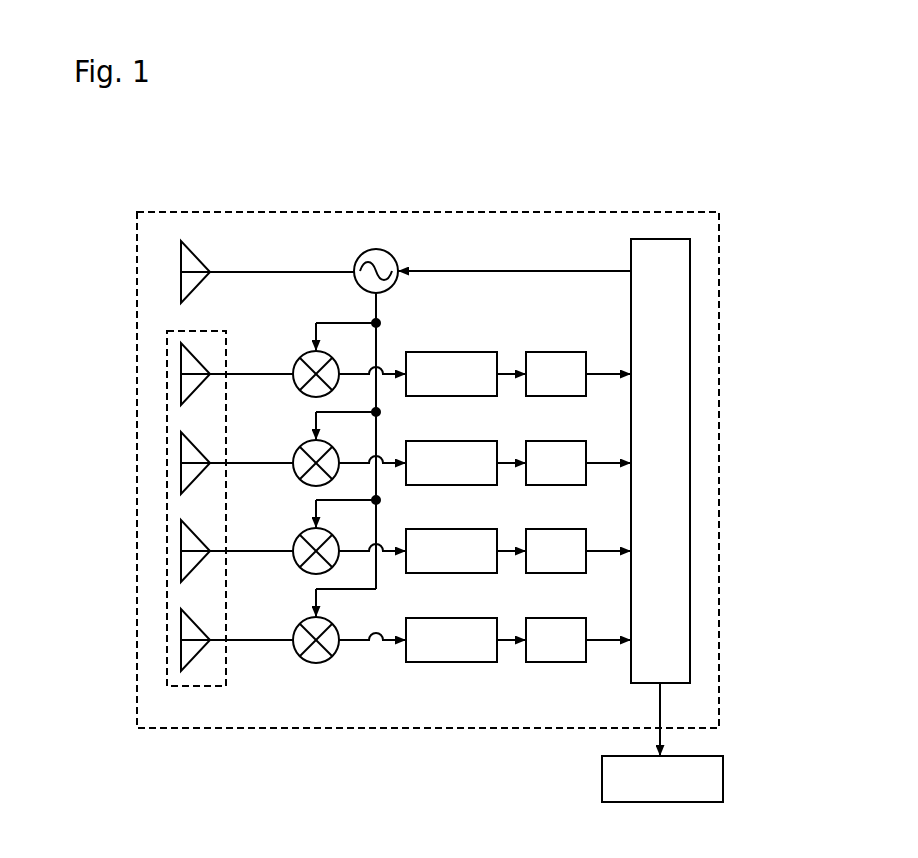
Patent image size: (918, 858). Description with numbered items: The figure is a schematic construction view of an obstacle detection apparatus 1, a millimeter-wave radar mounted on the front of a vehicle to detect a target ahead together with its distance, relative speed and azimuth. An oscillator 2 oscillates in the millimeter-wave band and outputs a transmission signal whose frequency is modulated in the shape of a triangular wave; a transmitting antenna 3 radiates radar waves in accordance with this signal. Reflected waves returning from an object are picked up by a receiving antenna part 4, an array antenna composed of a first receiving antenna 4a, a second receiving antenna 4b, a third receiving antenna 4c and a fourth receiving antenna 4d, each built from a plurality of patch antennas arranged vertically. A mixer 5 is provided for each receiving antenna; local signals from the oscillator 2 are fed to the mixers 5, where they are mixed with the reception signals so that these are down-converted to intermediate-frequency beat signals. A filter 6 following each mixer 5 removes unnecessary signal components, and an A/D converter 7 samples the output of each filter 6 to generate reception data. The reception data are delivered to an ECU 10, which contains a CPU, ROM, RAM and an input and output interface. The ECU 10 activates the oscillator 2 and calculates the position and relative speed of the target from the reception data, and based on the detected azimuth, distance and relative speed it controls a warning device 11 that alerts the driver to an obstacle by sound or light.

The obstacle detection apparatus 1 is at (257, 729).
The oscillator 2 is at (386, 250).
The transmitting antenna 3 is at (181, 258).
The receiving antenna part 4 is at (167, 331).
The first receiving antenna 4a is at (181, 365).
The second receiving antenna 4b is at (181, 454).
The third receiving antenna 4c is at (181, 542).
The fourth receiving antenna 4d is at (181, 631).
The mixer 5 is at (306, 356).
The filter 6 is at (450, 351).
The A/D converter 7 is at (556, 351).
The ECU 10 is at (690, 293).
The warning device 11 is at (602, 778).